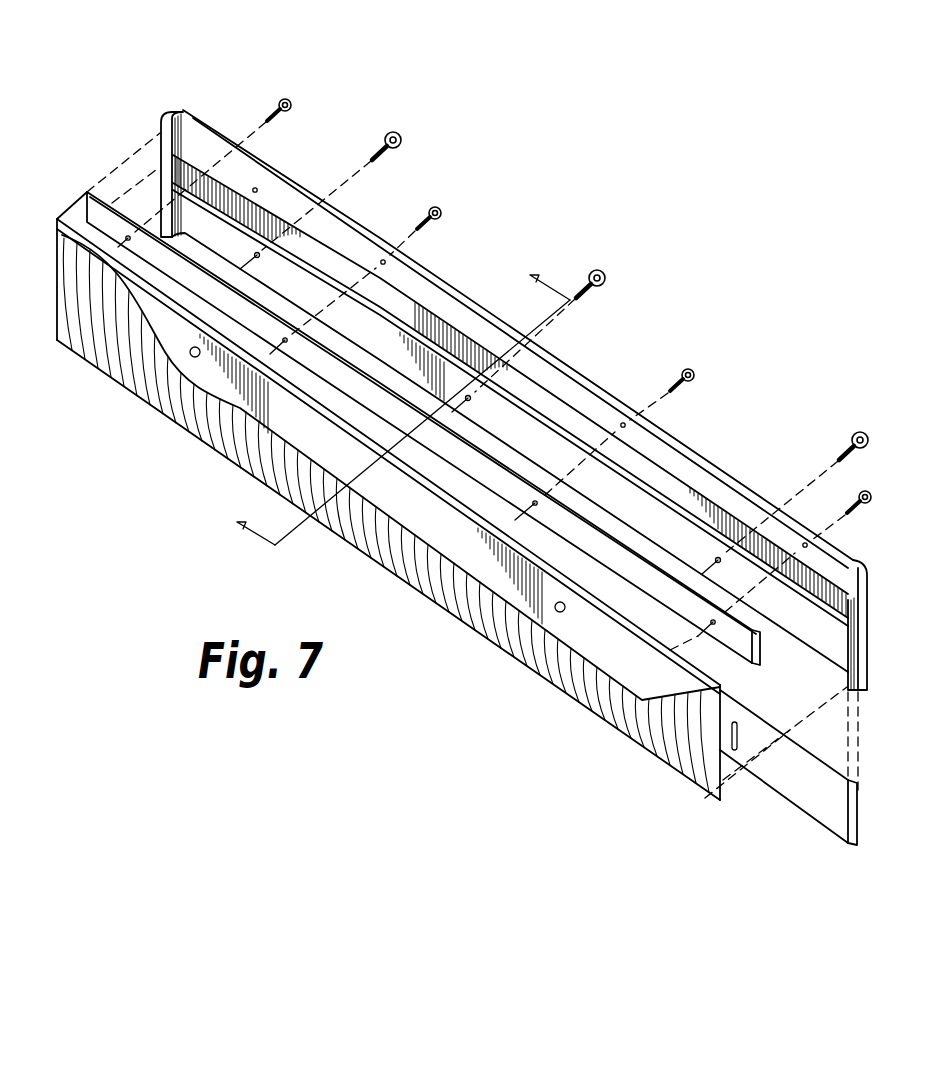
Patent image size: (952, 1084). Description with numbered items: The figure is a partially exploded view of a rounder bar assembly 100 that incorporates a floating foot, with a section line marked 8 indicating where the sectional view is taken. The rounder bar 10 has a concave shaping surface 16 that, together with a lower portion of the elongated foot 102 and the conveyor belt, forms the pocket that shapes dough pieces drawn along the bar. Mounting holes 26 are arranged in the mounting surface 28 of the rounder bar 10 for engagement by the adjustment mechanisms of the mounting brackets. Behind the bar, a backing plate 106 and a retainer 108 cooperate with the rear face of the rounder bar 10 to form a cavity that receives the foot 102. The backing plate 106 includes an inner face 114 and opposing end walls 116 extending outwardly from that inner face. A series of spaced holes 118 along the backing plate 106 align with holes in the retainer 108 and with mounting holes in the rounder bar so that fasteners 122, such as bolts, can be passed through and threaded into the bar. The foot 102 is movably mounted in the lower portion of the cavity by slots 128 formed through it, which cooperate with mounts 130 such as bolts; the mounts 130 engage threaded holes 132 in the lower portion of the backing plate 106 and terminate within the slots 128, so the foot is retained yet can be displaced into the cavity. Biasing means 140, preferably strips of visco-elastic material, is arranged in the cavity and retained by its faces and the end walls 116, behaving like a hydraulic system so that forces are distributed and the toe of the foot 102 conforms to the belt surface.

The rounder bar 10 is at (130, 477).
The rounder bar assembly 100 is at (633, 197).
The shaping surface 16 is at (400, 556).
The mounting surface 28 is at (362, 474).
The mounting holes 26 is at (191, 347).
The foot 102 is at (795, 790).
The slots 128 is at (742, 722).
The end walls 116 is at (170, 120).
The backing plate 106 is at (718, 455).
The inner face 114 is at (567, 382).
The biasing means 140 is at (413, 320).
The threaded holes 132 is at (259, 257).
The retainer 108 is at (610, 550).
The holes 118 is at (125, 235).
The fasteners 122 is at (293, 101).
The mounts 130 is at (401, 137).
The section line 8 is at (391, 400).